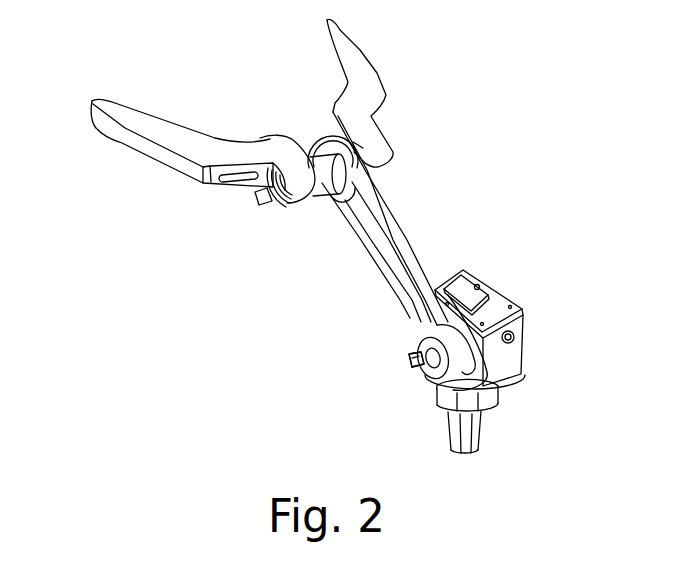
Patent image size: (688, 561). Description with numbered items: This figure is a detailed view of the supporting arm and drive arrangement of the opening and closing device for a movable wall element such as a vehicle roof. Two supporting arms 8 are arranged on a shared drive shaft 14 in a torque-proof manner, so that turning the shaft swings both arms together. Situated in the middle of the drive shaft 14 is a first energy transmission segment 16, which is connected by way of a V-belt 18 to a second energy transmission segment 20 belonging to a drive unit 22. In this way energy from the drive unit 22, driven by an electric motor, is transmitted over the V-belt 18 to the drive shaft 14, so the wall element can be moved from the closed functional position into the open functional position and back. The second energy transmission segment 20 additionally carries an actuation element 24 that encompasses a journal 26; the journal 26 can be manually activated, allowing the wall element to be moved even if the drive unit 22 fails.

The supporting arm 8 is at (135, 138).
The drive shaft 14 is at (373, 147).
The first energy transmission segment 16 is at (333, 138).
The V-belt 18 is at (390, 212).
The second energy transmission segment 20 is at (427, 328).
The drive unit 22 is at (523, 309).
The actuation element 24 is at (417, 362).
The journal 26 is at (416, 359).